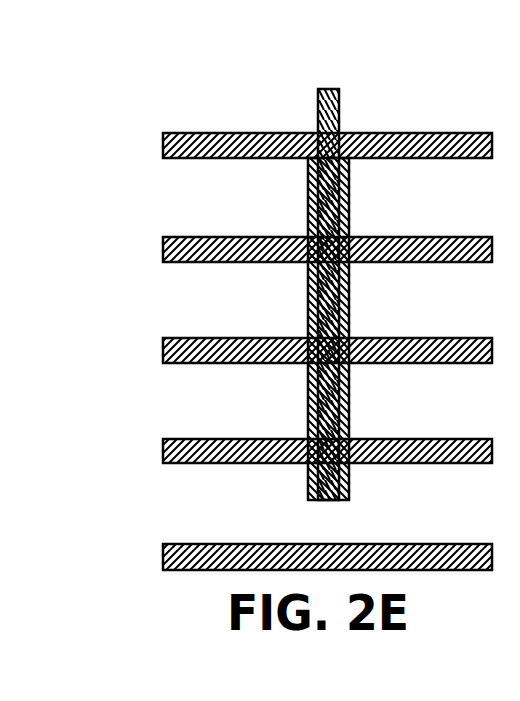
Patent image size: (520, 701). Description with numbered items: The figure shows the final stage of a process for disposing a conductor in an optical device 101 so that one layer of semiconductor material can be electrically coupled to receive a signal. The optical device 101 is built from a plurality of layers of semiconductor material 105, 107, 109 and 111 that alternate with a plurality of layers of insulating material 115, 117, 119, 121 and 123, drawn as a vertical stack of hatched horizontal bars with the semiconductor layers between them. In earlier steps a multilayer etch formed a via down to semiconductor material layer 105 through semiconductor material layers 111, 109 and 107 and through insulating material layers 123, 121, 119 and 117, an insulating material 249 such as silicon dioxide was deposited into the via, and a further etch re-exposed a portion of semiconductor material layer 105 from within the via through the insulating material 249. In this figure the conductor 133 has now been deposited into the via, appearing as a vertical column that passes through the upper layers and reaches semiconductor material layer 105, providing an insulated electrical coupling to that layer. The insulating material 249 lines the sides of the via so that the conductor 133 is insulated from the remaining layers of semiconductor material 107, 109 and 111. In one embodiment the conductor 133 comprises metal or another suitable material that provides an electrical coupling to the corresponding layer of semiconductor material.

The optical device 101 is at (155, 70).
The semiconductor material layer 105 is at (167, 517).
The semiconductor material layer 107 is at (207, 412).
The semiconductor material layer 109 is at (207, 309).
The semiconductor material layer 111 is at (207, 207).
The insulating material layer 115 is at (163, 560).
The insulating material layer 117 is at (163, 455).
The insulating material layer 119 is at (163, 354).
The insulating material layer 121 is at (163, 253).
The insulating material layer 123 is at (163, 149).
The conductor 133 is at (337, 89).
The insulating material 249 is at (349, 182).